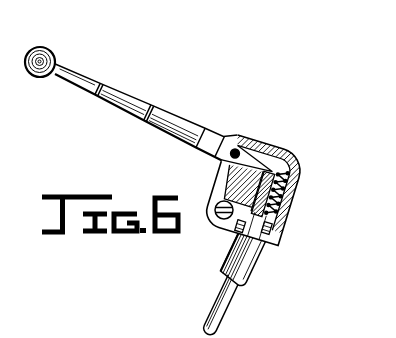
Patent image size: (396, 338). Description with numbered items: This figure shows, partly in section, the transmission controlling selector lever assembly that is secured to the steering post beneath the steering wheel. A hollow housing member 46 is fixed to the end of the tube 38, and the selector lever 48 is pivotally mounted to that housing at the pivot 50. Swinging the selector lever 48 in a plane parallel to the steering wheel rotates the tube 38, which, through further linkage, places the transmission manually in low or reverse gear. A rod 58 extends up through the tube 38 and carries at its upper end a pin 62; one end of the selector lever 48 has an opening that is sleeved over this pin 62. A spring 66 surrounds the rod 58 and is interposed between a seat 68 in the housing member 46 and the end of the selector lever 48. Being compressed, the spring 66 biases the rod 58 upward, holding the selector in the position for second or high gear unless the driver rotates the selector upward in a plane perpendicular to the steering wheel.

The tube 38 is at (247, 268).
The hollow housing member 46 is at (296, 203).
The selector lever 48 is at (166, 112).
The pivot 50 is at (250, 138).
The rod 58 is at (222, 317).
The pin 62 is at (302, 178).
The spring 66 is at (297, 192).
The seat 68 is at (238, 243).